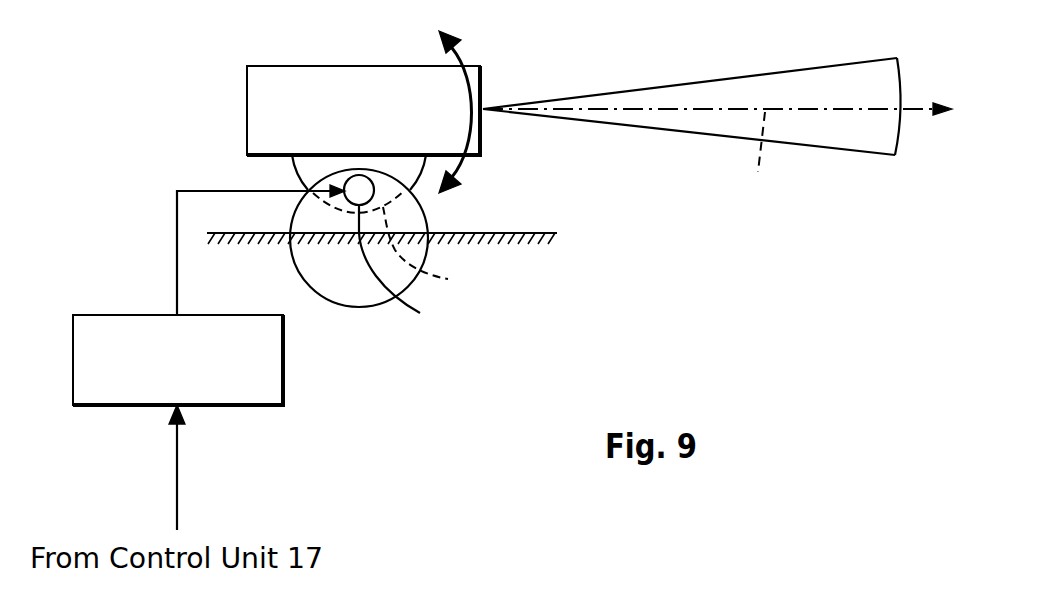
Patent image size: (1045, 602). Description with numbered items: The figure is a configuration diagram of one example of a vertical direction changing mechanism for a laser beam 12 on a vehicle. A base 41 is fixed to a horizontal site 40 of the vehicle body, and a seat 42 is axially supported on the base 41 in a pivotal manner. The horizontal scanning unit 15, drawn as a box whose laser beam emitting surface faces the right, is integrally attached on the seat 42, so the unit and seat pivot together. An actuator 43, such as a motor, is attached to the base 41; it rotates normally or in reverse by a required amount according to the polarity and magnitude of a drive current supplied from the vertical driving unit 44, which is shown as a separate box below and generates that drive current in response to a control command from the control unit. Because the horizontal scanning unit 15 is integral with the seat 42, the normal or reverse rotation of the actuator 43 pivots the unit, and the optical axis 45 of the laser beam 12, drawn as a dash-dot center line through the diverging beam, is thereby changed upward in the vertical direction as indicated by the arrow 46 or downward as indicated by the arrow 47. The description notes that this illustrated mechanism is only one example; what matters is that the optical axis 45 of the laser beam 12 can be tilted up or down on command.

The laser beam 12 is at (757, 76).
The horizontal scanning unit 15 is at (319, 66).
The horizontal site 40 is at (223, 233).
The base 41 is at (428, 222).
The seat 42 is at (403, 242).
The actuator 43 is at (411, 269).
The vertical driving unit 44 is at (135, 313).
The optical axis 45 is at (759, 176).
The arrow 46 is at (484, 83).
The arrow 47 is at (484, 135).